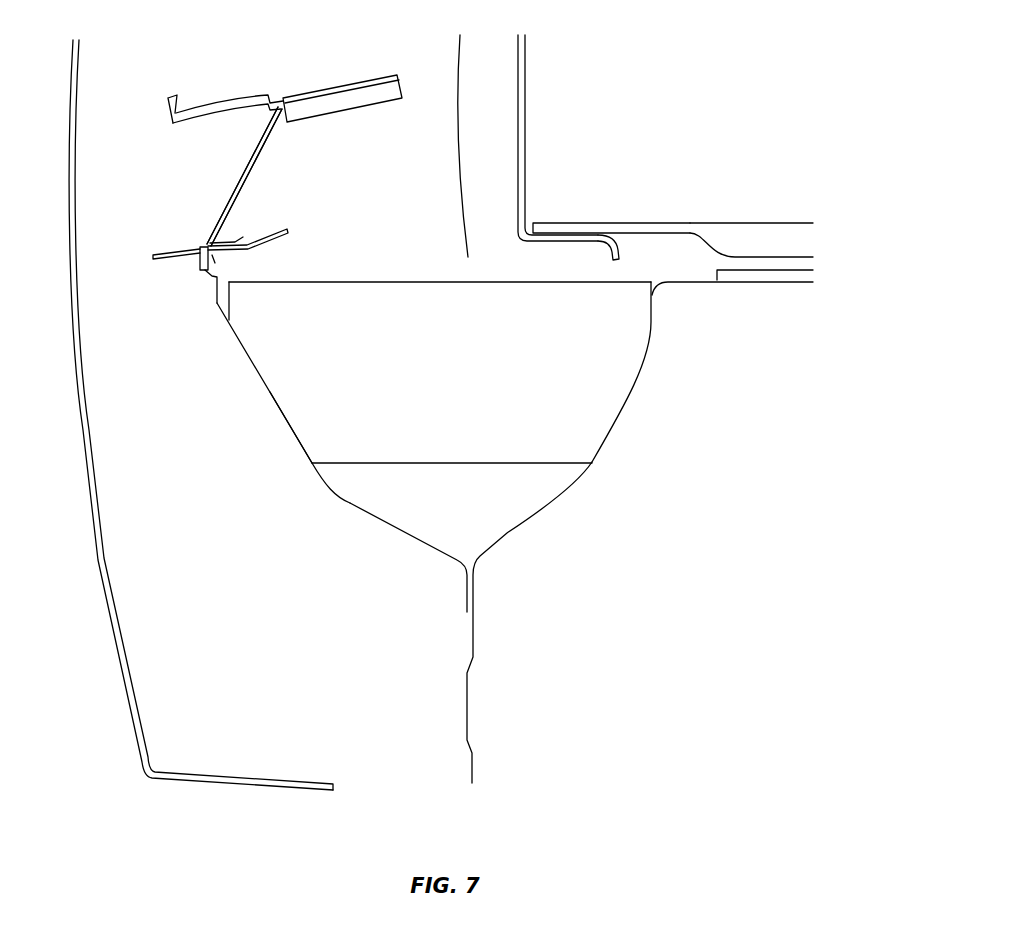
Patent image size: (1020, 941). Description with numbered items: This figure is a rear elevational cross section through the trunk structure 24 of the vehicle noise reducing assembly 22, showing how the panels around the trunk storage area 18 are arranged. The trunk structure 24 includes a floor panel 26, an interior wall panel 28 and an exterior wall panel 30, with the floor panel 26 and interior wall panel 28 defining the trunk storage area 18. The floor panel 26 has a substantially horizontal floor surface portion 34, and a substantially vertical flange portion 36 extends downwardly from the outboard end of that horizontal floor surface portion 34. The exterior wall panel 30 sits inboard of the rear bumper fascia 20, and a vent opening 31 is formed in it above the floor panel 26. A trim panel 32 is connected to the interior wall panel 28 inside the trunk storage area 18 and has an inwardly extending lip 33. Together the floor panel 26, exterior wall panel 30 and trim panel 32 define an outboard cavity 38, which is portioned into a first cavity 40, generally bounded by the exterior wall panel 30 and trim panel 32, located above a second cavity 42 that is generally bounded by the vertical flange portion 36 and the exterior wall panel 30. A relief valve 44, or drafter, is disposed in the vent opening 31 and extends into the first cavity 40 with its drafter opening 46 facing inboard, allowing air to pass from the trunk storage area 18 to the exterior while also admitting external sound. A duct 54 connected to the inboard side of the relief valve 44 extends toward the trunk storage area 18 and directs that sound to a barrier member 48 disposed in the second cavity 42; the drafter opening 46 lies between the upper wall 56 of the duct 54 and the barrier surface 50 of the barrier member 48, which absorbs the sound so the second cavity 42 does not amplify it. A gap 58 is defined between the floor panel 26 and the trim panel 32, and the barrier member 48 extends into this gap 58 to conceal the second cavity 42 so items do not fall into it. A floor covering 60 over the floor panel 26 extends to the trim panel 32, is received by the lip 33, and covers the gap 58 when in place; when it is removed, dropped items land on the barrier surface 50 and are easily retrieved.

The trunk storage area 18 is at (746, 162).
The rear bumper fascia 20 is at (103, 588).
The vehicle noise reducing assembly 22 is at (243, 668).
The trunk structure 24 is at (612, 632).
The floor panel 26 is at (692, 283).
The interior wall panel 28 is at (458, 72).
The exterior wall panel 30 is at (177, 88).
The vent opening 31 is at (212, 240).
The trim panel 32 is at (527, 120).
The lip 33 is at (568, 235).
The horizontal floor surface portion 34 is at (777, 283).
The vertical flange portion 36 is at (600, 448).
The outboard cavity 38 is at (383, 503).
The first cavity 40 is at (395, 221).
The second cavity 42 is at (446, 520).
The relief valve 44 is at (235, 183).
The drafter opening 46 is at (251, 160).
The barrier member 48 is at (313, 430).
The barrier surface 50 is at (340, 282).
The duct 54 is at (327, 88).
The upper wall 56 is at (374, 78).
The gap 58 is at (612, 272).
The floor covering 60 is at (782, 222).